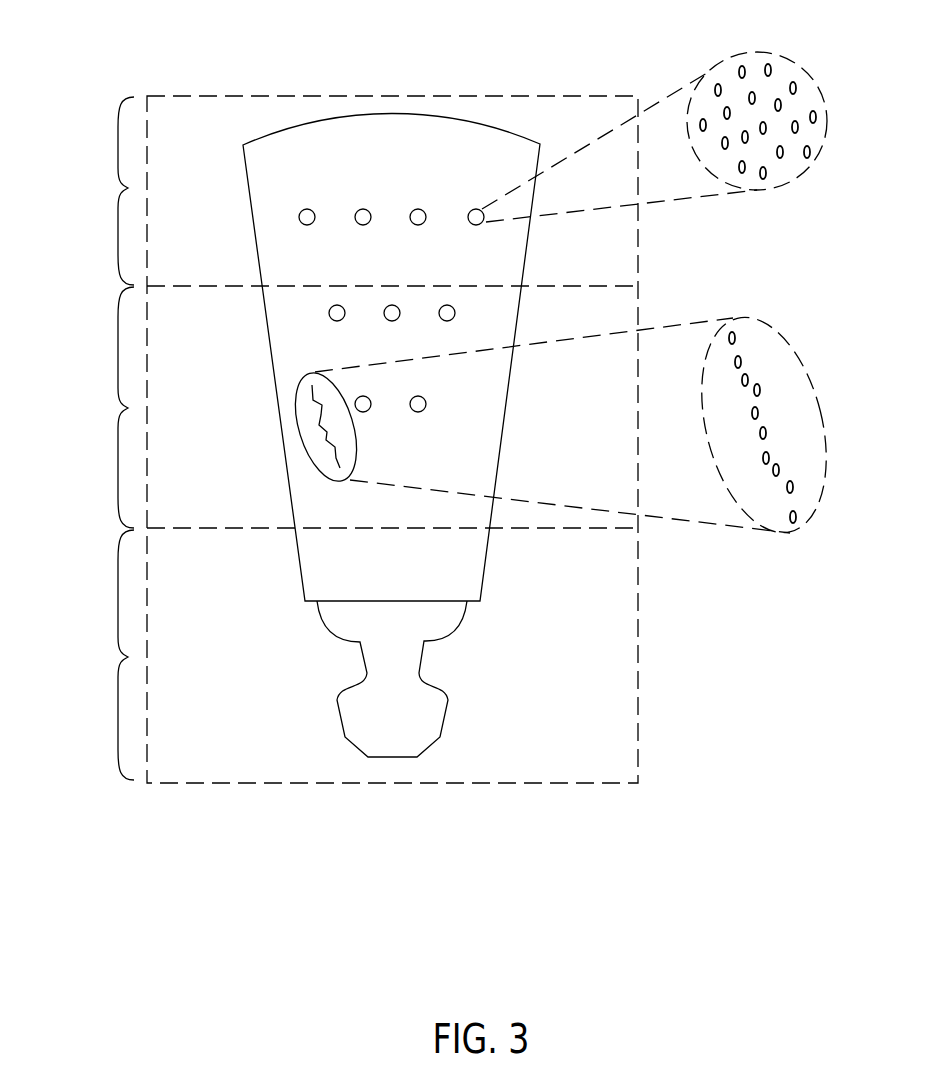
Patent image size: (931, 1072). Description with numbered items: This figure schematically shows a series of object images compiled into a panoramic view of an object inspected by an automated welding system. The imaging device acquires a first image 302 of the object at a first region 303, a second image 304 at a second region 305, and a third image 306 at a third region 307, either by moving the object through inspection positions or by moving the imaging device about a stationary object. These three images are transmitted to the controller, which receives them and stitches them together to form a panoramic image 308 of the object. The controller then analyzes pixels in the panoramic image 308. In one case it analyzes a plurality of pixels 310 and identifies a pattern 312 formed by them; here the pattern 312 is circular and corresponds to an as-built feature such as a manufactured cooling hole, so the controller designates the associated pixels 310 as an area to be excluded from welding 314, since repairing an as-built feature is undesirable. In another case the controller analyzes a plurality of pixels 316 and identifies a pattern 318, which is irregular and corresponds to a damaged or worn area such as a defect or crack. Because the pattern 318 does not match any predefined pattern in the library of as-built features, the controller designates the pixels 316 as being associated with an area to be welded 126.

The area to be welded 126 is at (322, 418).
The first image 302 is at (206, 138).
The first region 303 is at (124, 189).
The second image 304 is at (206, 328).
The second region 305 is at (124, 409).
The third image 306 is at (206, 573).
The third region 307 is at (124, 656).
The panoramic image 308 is at (533, 83).
The plurality of pixels 310 is at (800, 73).
The pattern 312 is at (818, 88).
The area to be excluded from welding 314 is at (474, 210).
The plurality of pixels 316 is at (752, 352).
The pattern 318 is at (803, 387).